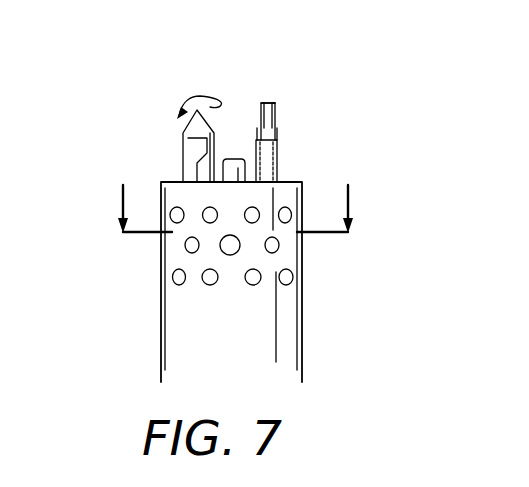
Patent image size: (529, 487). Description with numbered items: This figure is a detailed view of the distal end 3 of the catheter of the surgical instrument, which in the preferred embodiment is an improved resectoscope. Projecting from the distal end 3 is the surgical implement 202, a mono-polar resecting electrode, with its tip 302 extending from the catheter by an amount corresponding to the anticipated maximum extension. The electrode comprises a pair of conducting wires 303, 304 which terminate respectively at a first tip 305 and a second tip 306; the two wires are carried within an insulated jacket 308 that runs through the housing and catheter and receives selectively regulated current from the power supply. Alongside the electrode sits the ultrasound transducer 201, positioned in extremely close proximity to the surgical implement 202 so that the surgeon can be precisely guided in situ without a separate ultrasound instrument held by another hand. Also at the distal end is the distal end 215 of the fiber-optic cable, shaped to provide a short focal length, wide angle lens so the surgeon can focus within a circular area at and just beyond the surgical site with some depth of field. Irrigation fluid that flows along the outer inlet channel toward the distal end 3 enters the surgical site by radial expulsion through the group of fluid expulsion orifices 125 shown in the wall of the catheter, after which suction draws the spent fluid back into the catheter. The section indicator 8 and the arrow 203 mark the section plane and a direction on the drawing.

The distal end 3 is at (150, 122).
The section line 8- 8 is at (235, 230).
The fluid expulsion orifices 125 is at (291, 213).
The ultrasound transducer 201 is at (183, 146).
The surgical implement 202 is at (290, 148).
The gap / slot 203 is at (240, 130).
The distal end of fiber-optic cable 215 is at (224, 157).
The tip 302 is at (308, 105).
The conducting wire 303 is at (276, 118).
The conducting wire 304 is at (276, 120).
The first tip 305 is at (269, 101).
The second tip 306 is at (277, 103).
The insulated jacket 308 is at (278, 173).